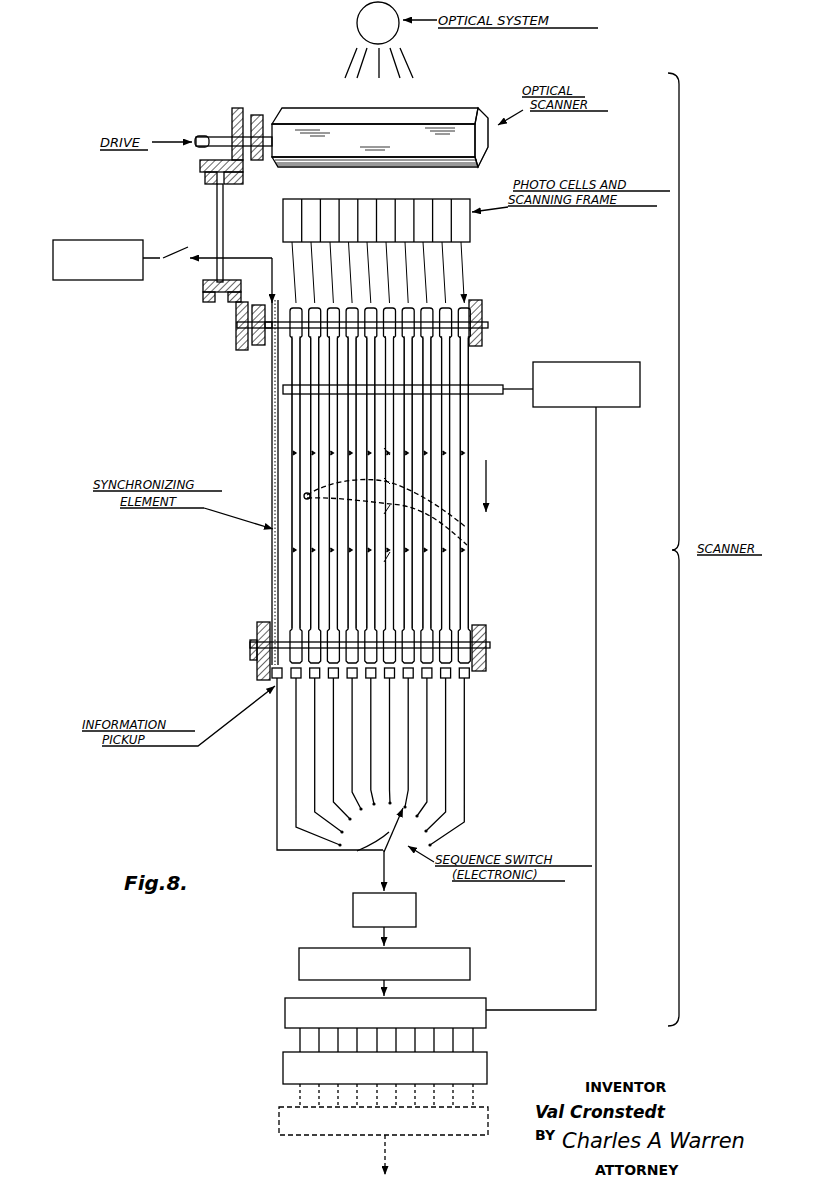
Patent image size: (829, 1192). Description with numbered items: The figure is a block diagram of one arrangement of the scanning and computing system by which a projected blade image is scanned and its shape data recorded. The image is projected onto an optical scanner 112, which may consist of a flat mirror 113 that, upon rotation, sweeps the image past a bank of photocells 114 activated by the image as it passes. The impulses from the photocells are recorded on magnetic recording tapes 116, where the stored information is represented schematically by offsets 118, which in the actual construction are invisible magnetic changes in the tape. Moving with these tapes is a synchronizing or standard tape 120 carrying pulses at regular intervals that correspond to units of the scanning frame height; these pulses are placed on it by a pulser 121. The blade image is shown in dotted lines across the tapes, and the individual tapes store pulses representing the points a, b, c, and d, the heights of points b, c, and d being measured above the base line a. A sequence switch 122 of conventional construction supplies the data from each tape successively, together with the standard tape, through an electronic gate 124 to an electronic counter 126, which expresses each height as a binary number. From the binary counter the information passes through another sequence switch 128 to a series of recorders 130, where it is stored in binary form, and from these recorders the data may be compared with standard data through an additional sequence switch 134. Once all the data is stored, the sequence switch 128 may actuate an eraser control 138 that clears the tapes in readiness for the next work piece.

The optical scanner 112 is at (488, 146).
The flat mirror 113 is at (440, 113).
The bank of photocells 114 is at (471, 223).
The magnetic recording tapes 116 is at (486, 333).
The offsets 118 is at (465, 450).
The synchronizing or standard tape 120 is at (272, 460).
The pulser 121 is at (134, 222).
The sequence switch 122 is at (376, 851).
The electronic gate 124 is at (420, 903).
The electronic counter 126 is at (470, 958).
The sequence switch 128 is at (488, 1000).
The recorders 130 is at (481, 1062).
The sequence switch 134 is at (490, 1108).
The eraser control 138 is at (616, 362).
The base line point a is at (382, 562).
The image point b is at (382, 512).
The image point c is at (382, 476).
The image point d is at (382, 447).